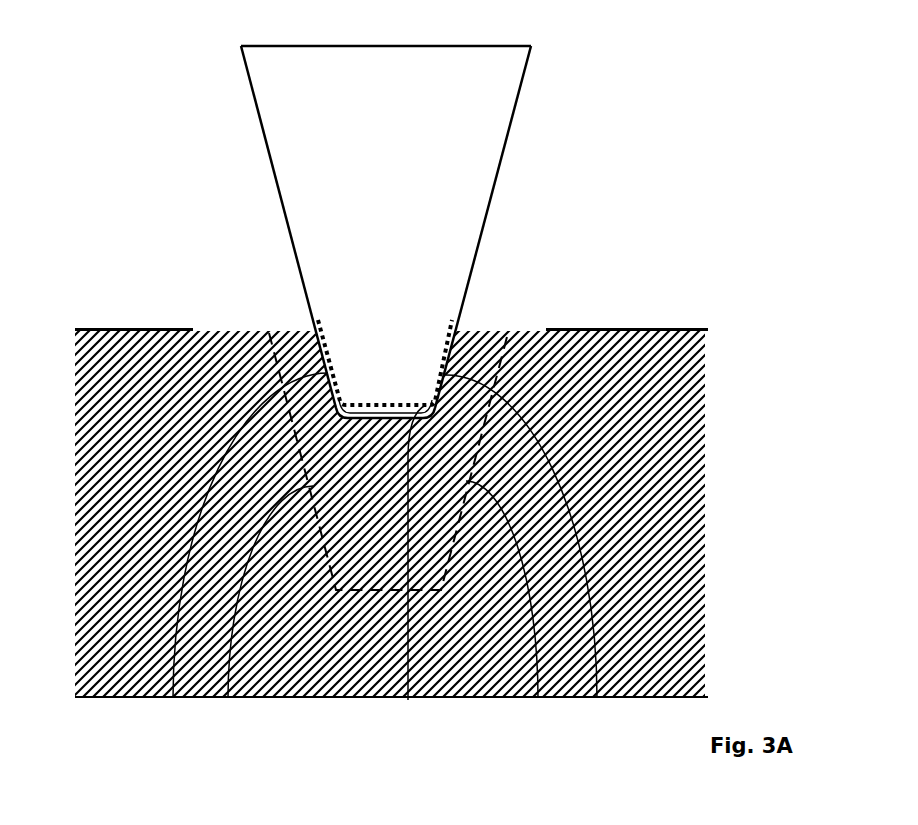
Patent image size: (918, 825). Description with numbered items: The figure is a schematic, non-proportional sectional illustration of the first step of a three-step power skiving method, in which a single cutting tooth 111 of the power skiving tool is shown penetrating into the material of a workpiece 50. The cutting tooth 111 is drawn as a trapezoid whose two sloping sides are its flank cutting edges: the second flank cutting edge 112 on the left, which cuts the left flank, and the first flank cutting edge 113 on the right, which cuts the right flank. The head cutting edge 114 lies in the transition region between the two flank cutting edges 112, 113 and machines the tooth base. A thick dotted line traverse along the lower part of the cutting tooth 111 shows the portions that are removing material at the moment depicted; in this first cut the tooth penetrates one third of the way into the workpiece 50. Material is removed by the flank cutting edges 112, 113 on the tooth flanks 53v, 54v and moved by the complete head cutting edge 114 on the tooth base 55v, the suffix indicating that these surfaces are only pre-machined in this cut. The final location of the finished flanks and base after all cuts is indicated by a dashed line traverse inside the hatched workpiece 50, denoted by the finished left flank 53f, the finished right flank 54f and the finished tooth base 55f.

The workpiece 50 is at (93, 652).
The cutting tooth 111 is at (378, 97).
The second flank cutting edge 112 is at (255, 130).
The first flank cutting edge 113 is at (498, 135).
The head cutting edge 114 is at (349, 392).
The pre-machined left tooth flank 53v is at (165, 690).
The finished left tooth flank 53f is at (220, 690).
The finished tooth base 55f is at (353, 585).
The pre-machined tooth base 55v is at (412, 560).
The finished right tooth flank 54f is at (530, 690).
The pre-machined right tooth flank 54v is at (589, 690).